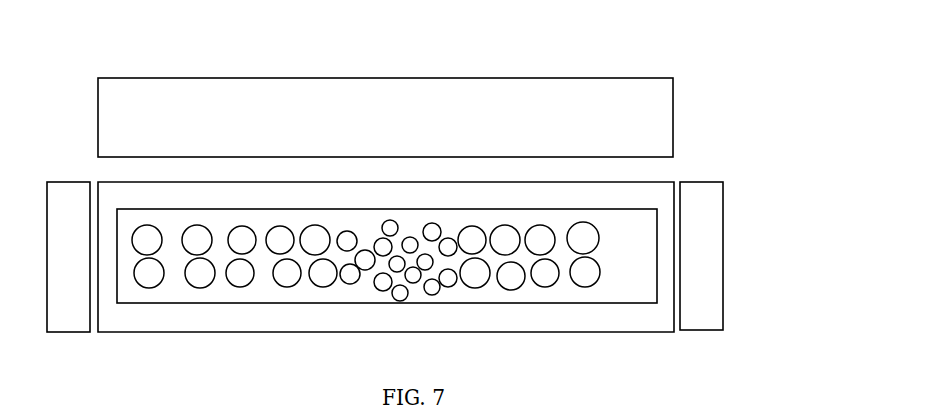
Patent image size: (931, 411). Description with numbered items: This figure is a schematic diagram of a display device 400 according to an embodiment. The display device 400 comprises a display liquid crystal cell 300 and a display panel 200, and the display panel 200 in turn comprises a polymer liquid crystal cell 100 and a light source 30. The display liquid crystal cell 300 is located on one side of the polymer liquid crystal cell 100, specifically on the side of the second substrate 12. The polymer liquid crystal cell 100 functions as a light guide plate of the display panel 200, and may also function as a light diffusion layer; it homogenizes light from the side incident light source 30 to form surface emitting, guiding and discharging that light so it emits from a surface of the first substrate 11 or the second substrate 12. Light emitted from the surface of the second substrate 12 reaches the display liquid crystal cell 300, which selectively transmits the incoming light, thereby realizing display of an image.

The display device 400 is at (777, 44).
The display liquid crystal cell 300 is at (660, 108).
The display panel 200 is at (766, 155).
The polymer liquid crystal cell 100 is at (652, 189).
The light source 30 is at (703, 292).
The second substrate 12 is at (128, 192).
The first substrate 11 is at (113, 313).